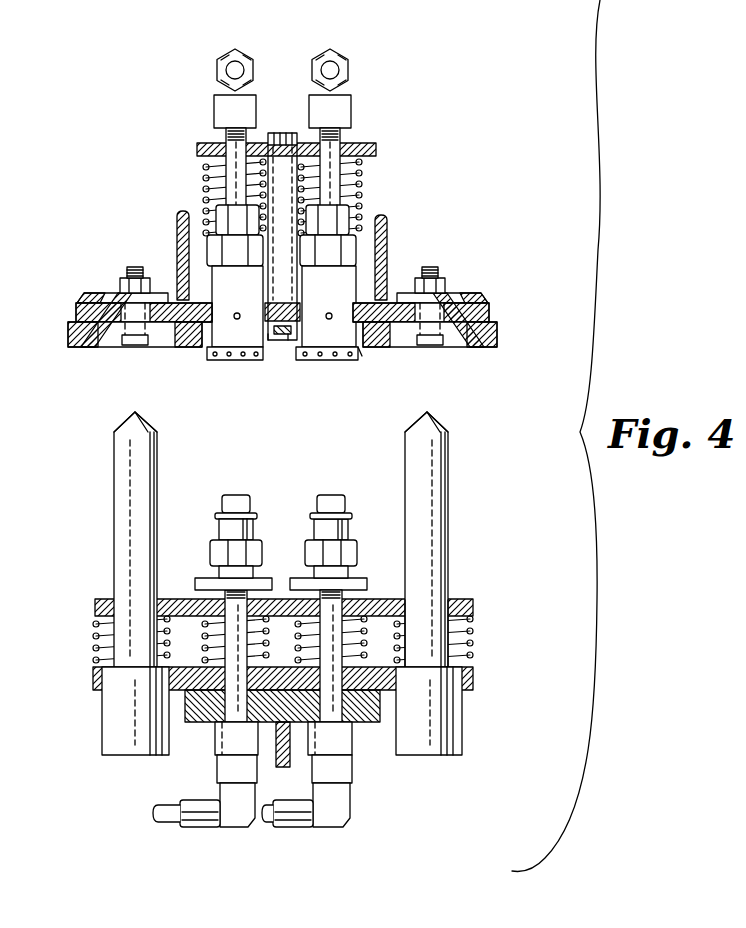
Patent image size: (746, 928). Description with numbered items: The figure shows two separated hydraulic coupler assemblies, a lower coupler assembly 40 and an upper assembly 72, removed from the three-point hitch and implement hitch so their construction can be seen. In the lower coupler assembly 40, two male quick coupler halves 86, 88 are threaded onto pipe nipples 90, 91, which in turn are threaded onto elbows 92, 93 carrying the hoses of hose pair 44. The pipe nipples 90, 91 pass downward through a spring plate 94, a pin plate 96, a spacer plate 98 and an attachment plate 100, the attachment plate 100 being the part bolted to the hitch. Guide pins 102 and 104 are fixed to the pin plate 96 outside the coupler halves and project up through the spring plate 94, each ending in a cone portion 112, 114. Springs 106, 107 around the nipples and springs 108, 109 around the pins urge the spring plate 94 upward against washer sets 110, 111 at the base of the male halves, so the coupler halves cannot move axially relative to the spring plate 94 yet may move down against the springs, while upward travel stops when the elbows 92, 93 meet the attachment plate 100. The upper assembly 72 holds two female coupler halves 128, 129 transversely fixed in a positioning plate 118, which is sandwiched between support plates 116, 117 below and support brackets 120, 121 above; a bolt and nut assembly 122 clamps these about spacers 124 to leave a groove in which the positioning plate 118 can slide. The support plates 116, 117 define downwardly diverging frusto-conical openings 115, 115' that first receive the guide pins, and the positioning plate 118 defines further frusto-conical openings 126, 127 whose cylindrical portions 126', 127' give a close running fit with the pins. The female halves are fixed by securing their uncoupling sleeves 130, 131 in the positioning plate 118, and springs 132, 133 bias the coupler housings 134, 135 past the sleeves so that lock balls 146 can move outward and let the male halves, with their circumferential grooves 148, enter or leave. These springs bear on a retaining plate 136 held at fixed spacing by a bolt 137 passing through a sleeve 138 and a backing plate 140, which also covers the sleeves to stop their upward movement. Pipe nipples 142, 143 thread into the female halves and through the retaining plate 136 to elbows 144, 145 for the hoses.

The lower coupler assembly 40 is at (74, 710).
The hose pair 44 is at (170, 828).
The upper coupler assembly 72 is at (466, 176).
The male quick coupler half 86 is at (221, 502).
The male quick coupler half 88 is at (345, 503).
The pipe nipple 90 is at (352, 657).
The pipe nipple 91 is at (230, 642).
The elbow 92 is at (320, 830).
The elbow 93 is at (232, 828).
The spring plate 94 is at (471, 607).
The pin plate 96 is at (472, 678).
The spacer plate 98 is at (380, 695).
The attachment plate 100 is at (186, 722).
The guide pin 102 is at (438, 506).
The guide pin 104 is at (118, 522).
The spring 106 is at (395, 605).
The spring 107 is at (196, 610).
The spring 108 is at (470, 650).
The spring 109 is at (100, 640).
The washer set 110 is at (362, 592).
The washer set 111 is at (262, 588).
The cone portion 112 is at (440, 422).
The cone portion 114 is at (124, 421).
The frusto-conical opening 115 is at (472, 342).
The frusto-conical opening 115' is at (102, 350).
The support plate 116 is at (497, 334).
The support plate 117 is at (68, 336).
The positioning plate 118 is at (489, 307).
The support bracket 120 is at (372, 210).
The support bracket 121 is at (178, 222).
The bolt and nut assembly 122 is at (438, 270).
The spacer 124 is at (78, 299).
The frusto-conical opening 126 is at (432, 355).
The cylindrical portion 126' is at (450, 264).
The frusto-conical opening 127 is at (92, 343).
The cylindrical portion 127' is at (106, 278).
The female coupler half 128 is at (372, 192).
The female coupler half 129 is at (196, 194).
The uncoupling sleeve 130 is at (292, 342).
The uncoupling sleeve 131 is at (268, 342).
The spring 132 is at (362, 171).
The spring 133 is at (205, 166).
The coupler housing 134 is at (380, 270).
The coupler housing 135 is at (213, 280).
The retaining plate 136 is at (356, 144).
The bolt 137 is at (270, 132).
The sleeve 138 is at (294, 132).
The backing plate 140 is at (322, 360).
The pipe nipple 142 is at (354, 166).
The pipe nipple 143 is at (226, 137).
The elbow 144 is at (345, 54).
The elbow 145 is at (222, 54).
The lock ball 146 is at (362, 352).
The groove 148 is at (352, 524).